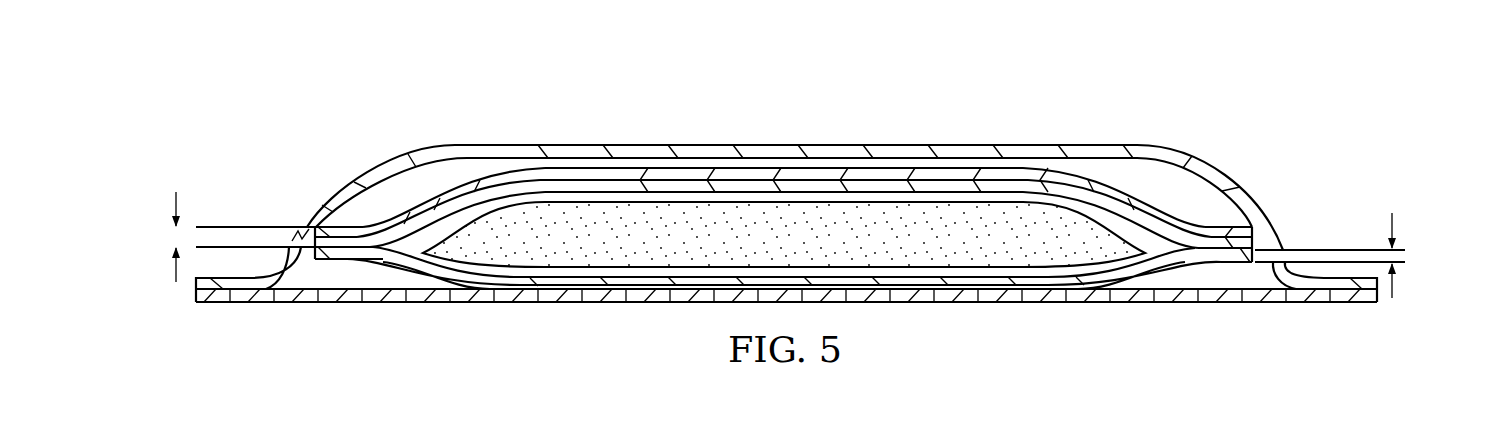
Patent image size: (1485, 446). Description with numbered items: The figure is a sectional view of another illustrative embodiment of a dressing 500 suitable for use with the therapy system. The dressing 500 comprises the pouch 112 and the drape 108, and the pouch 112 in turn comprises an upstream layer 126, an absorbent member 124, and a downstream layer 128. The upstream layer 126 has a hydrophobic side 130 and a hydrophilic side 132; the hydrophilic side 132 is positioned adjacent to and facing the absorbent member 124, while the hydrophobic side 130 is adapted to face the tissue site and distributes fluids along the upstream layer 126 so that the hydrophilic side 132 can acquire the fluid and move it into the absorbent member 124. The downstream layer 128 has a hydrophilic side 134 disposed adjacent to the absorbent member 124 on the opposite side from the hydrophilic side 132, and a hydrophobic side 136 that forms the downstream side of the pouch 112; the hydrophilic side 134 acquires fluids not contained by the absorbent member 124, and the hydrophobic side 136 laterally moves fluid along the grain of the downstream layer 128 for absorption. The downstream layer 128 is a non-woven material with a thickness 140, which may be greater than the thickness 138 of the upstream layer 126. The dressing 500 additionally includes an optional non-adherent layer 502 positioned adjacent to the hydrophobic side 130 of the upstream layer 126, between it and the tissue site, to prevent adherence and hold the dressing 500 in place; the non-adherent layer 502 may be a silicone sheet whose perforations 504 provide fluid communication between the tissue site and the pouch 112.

The dressing 500 is at (700, 133).
The drape 108 is at (903, 145).
The pouch 112 is at (1168, 194).
The absorbent member 124 is at (803, 247).
The upstream layer 126 is at (1363, 254).
The downstream layer 128 is at (235, 236).
The hydrophobic side 130 is at (343, 260).
The hydrophilic side 132 is at (1155, 263).
The hydrophilic side 134 is at (443, 223).
The hydrophobic side 136 is at (1072, 182).
The thickness 138 is at (1393, 224).
The thickness 140 is at (172, 207).
The non-adherent layer 502 is at (1235, 292).
The perforations 504 is at (440, 297).